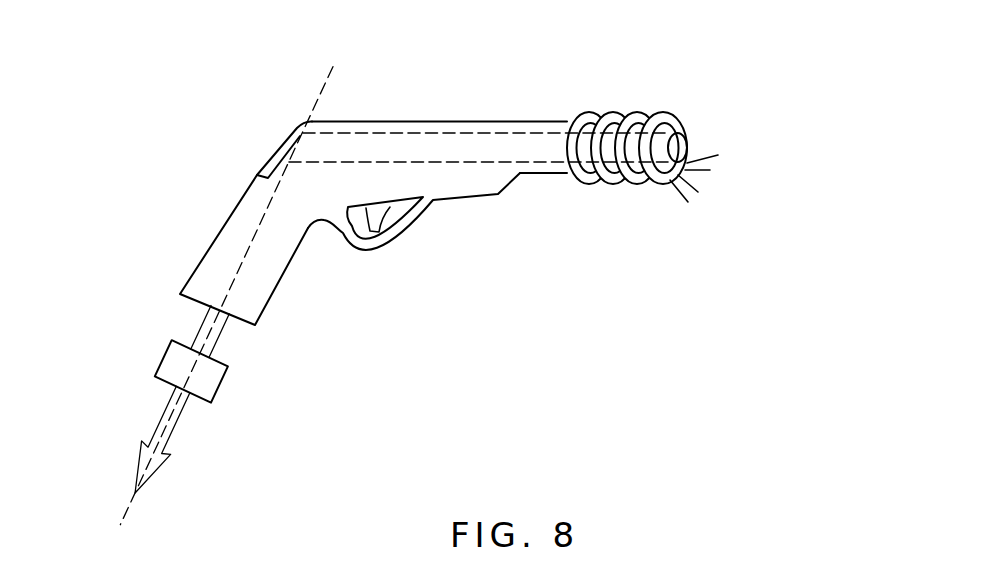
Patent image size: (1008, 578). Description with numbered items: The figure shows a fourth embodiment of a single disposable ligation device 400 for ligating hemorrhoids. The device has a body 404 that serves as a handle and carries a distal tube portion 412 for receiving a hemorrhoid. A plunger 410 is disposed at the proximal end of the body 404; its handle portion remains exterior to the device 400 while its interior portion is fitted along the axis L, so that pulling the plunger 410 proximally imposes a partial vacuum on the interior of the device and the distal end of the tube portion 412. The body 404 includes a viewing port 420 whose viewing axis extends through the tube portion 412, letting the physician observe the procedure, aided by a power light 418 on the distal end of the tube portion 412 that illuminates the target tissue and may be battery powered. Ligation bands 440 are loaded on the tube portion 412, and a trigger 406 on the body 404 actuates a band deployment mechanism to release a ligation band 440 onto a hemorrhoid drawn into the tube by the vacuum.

The ligation device 400 is at (487, 273).
The body 404 is at (248, 222).
The trigger 406 is at (403, 252).
The plunger 410 is at (222, 390).
The distal tube portion 412 is at (502, 134).
The power light 418 is at (705, 185).
The viewing port 420 is at (277, 147).
The ligation bands 440 is at (637, 113).